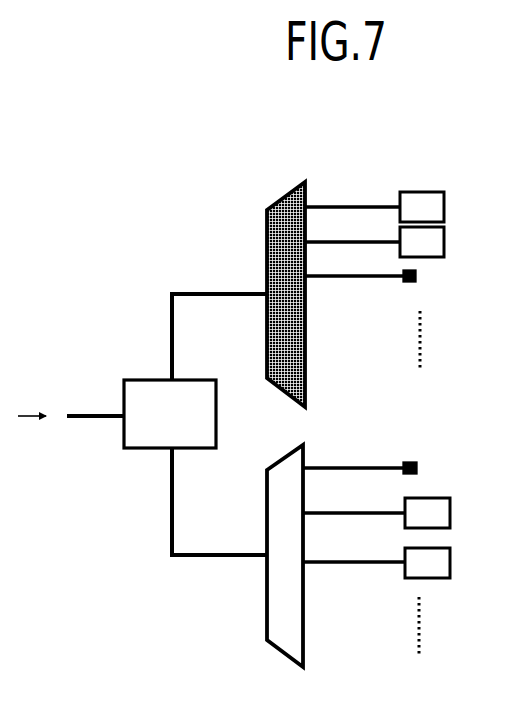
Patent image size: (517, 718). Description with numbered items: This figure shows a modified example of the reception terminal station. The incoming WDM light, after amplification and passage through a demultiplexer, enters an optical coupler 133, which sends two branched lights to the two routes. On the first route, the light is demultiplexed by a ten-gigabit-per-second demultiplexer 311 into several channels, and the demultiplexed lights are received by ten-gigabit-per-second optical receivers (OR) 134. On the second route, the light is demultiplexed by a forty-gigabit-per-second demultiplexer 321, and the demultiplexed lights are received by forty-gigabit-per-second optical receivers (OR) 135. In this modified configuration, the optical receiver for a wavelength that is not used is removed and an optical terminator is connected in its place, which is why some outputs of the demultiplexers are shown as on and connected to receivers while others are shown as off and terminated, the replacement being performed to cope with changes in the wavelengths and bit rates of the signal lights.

The optical coupler 133 is at (144, 379).
The 10 Gbit/s demultiplexer 311 is at (267, 262).
The 40 Gbit/s demultiplexer 321 is at (267, 535).
The 10 Gbit/s optical receivers (OR) 134 is at (422, 176).
The 40 Gbit/s optical receivers (OR) 135 is at (445, 480).